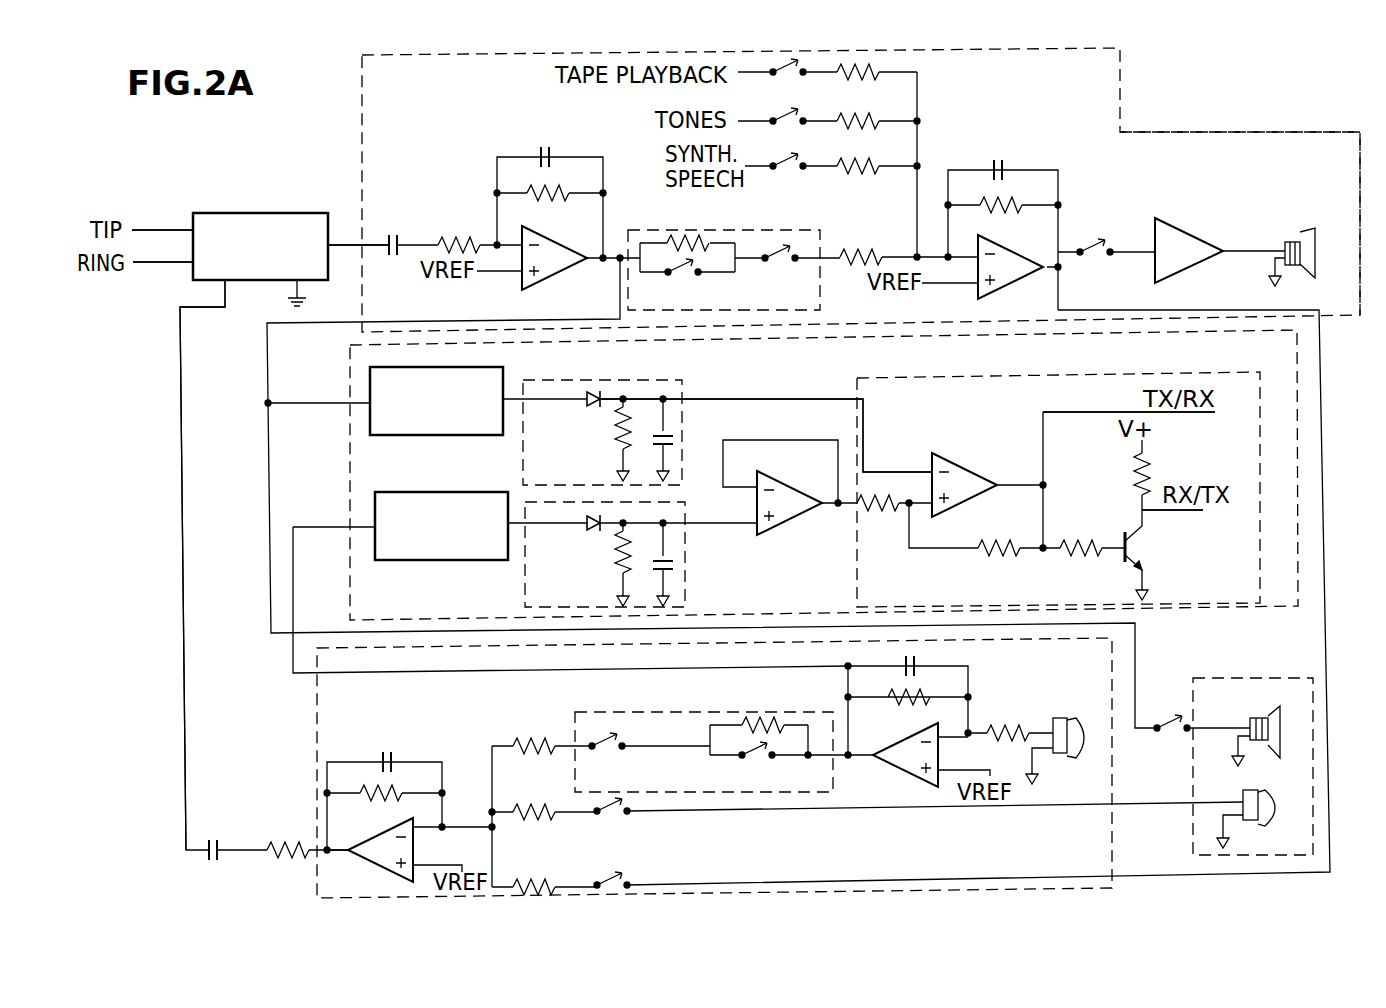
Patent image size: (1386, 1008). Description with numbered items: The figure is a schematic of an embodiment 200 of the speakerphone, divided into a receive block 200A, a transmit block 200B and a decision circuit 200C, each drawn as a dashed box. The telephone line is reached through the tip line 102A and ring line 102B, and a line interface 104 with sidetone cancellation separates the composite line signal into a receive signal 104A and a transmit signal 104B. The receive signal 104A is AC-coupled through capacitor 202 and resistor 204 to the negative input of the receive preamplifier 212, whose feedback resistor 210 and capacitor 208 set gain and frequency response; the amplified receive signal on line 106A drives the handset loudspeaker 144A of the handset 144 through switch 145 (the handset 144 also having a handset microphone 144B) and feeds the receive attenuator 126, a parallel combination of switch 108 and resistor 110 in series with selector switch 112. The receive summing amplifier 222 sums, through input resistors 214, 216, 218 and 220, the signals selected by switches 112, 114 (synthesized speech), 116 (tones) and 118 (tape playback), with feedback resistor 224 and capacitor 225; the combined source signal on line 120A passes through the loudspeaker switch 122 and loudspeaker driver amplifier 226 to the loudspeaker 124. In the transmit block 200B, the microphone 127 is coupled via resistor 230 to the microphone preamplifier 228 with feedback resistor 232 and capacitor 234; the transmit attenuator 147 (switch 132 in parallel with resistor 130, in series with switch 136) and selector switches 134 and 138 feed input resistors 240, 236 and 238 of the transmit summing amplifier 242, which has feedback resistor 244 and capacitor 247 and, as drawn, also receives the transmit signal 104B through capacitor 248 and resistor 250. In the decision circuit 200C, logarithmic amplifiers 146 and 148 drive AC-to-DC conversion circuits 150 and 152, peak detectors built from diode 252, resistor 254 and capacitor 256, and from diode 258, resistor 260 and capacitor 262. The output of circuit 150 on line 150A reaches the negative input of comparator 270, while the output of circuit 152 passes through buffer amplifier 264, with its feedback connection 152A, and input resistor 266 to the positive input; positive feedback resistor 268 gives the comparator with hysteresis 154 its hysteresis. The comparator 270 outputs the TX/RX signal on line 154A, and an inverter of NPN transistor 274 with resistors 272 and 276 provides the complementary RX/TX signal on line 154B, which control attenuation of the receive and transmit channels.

The tip line 102A is at (138, 228).
The ring line 102B is at (175, 265).
The line interface 104 is at (225, 213).
The receive signal 104A is at (354, 243).
The transmit signal 104B is at (180, 378).
The amplified receive signal line 106A is at (447, 320).
The switch 108 is at (675, 274).
The attenuator resistor 110 is at (672, 240).
The selector switch 112 is at (786, 263).
The selector switch 114 is at (780, 166).
The selector switch 116 is at (780, 121).
The selector switch 118 is at (780, 72).
The combined source signal line 120A is at (1068, 310).
The loudspeaker switch 122 is at (1088, 244).
The loudspeaker 124 is at (1303, 238).
The attenuator 126 is at (745, 230).
The microphone 127 is at (1078, 760).
The attenuator resistor 130 is at (745, 720).
The switch 132 is at (756, 757).
The selector switch 134 is at (610, 880).
The switch 136 is at (604, 746).
The selector switch 138 is at (609, 812).
The handset 144 is at (1243, 678).
The handset loudspeaker 144A is at (1272, 712).
The handset microphone 144B is at (1268, 792).
The switch 145 is at (1170, 740).
The logarithmic amplifier 146 is at (410, 436).
The attenuator 147 is at (635, 712).
The logarithmic amplifier 148 is at (415, 561).
The AC-to-DC conversion circuit 150 is at (660, 380).
The detector output line 150A is at (760, 397).
The AC-to-DC conversion circuit 152 is at (687, 585).
The buffer feedback 152A is at (760, 440).
The comparator with hysteresis 154 is at (1082, 374).
The TX/RX signal line 154A is at (1075, 411).
The RX/TX signal line 154B is at (1160, 512).
The speakerphone embodiment 200 is at (1207, 110).
The receive block 200A is at (362, 139).
The transmit block 200B is at (317, 712).
The decision circuit 200C is at (350, 458).
The capacitor 202 is at (392, 256).
The resistor 204 is at (472, 240).
The capacitor 208 is at (540, 152).
The resistor 210 is at (530, 188).
The receive preamplifier 212 is at (545, 285).
The input resistor 214 is at (848, 254).
The input resistor 216 is at (846, 161).
The input resistor 218 is at (846, 116).
The input resistor 220 is at (872, 68).
The receive summing amplifier 222 is at (980, 292).
The feedback resistor 224 is at (994, 212).
The capacitor 225 is at (1003, 165).
The loudspeaker driver amplifier 226 is at (1185, 273).
The microphone preamplifier 228 is at (906, 777).
The resistor 230 is at (1010, 727).
The resistor 232 is at (914, 706).
The capacitor 234 is at (970, 679).
The input resistor 236 is at (554, 880).
The input resistor 238 is at (554, 807).
The input resistor 240 is at (550, 740).
The transmit summing amplifier 242 is at (386, 868).
The feedback resistor 244 is at (390, 800).
The capacitor 247 is at (382, 758).
The capacitor 248 is at (280, 845).
The resistor 250 is at (222, 856).
The diode 252 is at (592, 390).
The resistor 254 is at (620, 445).
The capacitor 256 is at (672, 436).
The diode 258 is at (590, 528).
The resistor 260 is at (620, 570).
The capacitor 262 is at (672, 560).
The buffer amplifier 264 is at (770, 536).
The input resistor 266 is at (866, 510).
The feedback resistor 268 is at (1002, 556).
The comparator 270 is at (956, 510).
The resistor 272 is at (1074, 556).
The NPN transistor 274 is at (1122, 536).
The resistor 276 is at (1150, 475).